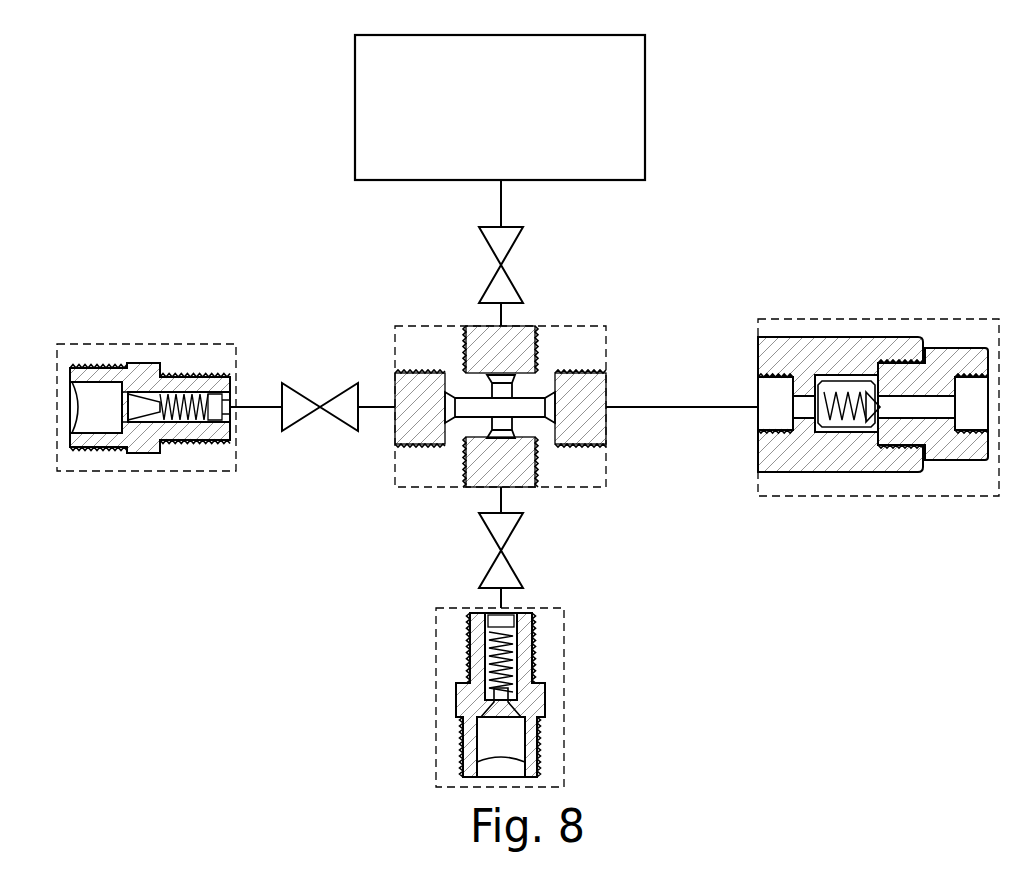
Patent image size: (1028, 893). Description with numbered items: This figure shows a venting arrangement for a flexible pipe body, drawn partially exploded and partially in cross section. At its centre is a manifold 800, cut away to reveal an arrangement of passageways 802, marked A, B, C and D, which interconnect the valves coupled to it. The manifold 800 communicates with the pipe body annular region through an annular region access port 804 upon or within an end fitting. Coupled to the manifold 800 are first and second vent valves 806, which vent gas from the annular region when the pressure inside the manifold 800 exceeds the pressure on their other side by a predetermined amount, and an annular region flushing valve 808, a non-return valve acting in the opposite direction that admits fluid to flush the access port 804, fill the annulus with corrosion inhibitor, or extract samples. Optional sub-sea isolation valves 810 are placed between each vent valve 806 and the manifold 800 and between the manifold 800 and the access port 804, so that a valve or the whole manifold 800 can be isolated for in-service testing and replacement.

The manifold 800 is at (582, 350).
The passageways 802 is at (513, 408).
The annular region access port 804 is at (619, 73).
The vent valve 806 is at (135, 378).
The annular region flushing valve 808 is at (802, 352).
The sub-sea isolation valve 810 is at (402, 407).